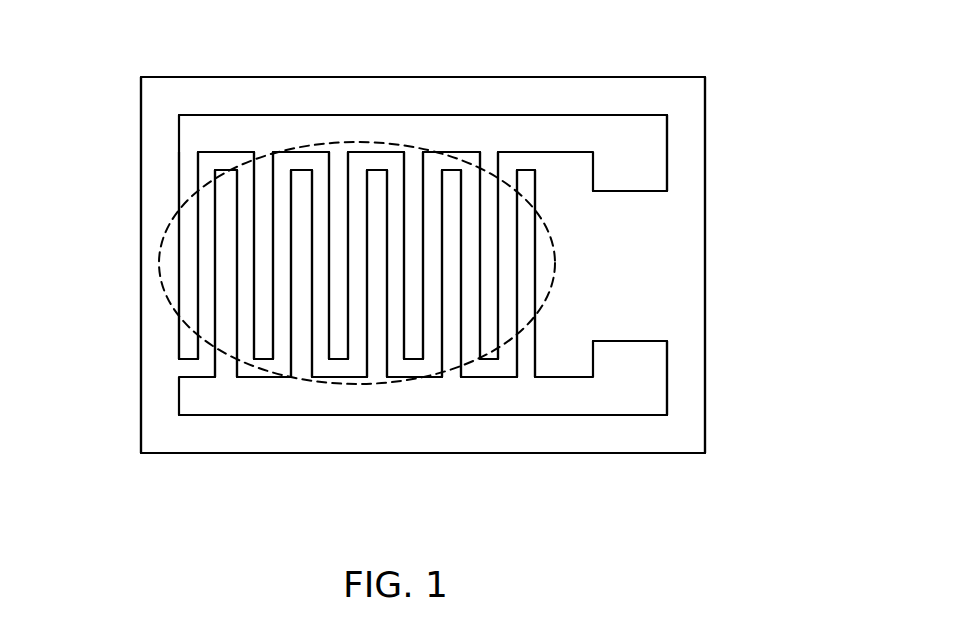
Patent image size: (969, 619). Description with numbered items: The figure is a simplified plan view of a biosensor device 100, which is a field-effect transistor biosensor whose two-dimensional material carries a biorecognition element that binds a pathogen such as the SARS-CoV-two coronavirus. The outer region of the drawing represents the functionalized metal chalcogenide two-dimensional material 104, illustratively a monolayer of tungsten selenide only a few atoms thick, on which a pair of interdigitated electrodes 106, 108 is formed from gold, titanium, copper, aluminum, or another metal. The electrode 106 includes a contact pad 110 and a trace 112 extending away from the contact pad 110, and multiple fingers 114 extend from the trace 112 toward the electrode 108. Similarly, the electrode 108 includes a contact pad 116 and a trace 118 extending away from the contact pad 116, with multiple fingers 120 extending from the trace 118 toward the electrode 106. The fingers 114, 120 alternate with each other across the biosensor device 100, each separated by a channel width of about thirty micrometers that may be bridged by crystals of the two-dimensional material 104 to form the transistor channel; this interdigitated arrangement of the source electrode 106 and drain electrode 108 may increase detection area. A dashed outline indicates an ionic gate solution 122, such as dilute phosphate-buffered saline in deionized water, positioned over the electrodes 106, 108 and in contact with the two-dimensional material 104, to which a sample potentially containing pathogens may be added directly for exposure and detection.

The biosensor device 100 is at (838, 93).
The functionalized metal chalcogenide 2D material 104 is at (300, 98).
The electrode 106 is at (648, 126).
The electrode 108 is at (657, 357).
The contact pad 110 is at (620, 148).
The trace 112 is at (550, 135).
The fingers 114 is at (267, 170).
The contact pad 116 is at (642, 373).
The trace 118 is at (532, 395).
The fingers 120 is at (227, 345).
The ionic gate solution 122 is at (163, 288).